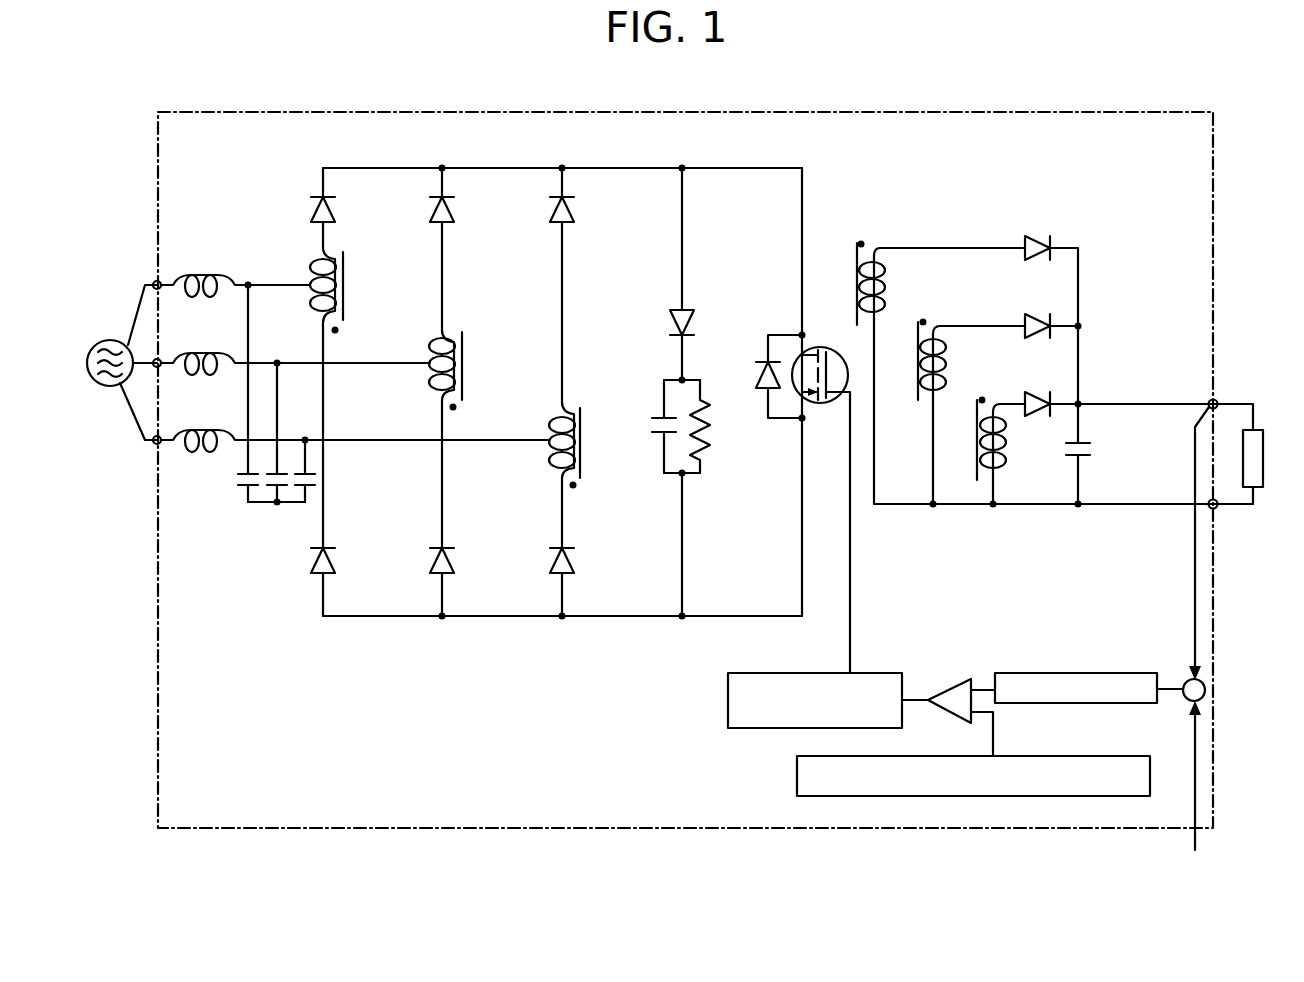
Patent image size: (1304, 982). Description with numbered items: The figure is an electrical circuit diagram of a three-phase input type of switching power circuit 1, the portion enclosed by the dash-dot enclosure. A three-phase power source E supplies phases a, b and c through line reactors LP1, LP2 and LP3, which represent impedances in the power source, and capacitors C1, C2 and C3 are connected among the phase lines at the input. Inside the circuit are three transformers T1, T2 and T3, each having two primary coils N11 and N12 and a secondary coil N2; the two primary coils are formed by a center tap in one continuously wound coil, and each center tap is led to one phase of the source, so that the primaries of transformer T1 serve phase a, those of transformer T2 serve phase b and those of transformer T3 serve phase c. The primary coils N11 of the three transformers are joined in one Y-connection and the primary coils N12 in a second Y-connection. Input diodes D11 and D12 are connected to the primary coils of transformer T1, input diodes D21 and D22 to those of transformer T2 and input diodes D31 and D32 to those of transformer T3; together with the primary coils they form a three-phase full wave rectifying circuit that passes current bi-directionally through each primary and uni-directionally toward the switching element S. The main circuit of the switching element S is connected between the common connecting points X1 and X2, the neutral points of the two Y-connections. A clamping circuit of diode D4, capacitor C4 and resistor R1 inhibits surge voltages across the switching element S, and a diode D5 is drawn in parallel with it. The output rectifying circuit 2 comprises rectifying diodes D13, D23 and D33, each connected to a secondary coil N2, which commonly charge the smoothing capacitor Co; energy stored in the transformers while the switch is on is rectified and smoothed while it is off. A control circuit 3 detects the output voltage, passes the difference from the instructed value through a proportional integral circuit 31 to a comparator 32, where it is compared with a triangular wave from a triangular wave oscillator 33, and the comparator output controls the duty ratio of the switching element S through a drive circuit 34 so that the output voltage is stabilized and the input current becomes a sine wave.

The 3-phase input type of switching power circuit 1 is at (464, 112).
The output rectifying circuit 2 is at (1044, 347).
The control circuit 3 is at (940, 628).
The proportional integral circuit 31 is at (999, 673).
The comparator 32 is at (943, 686).
The triangular wave oscillator 33 is at (797, 774).
The drive circuit 34 is at (728, 706).
The 3-phase power source E is at (97, 385).
The phase a is at (154, 281).
The phase b is at (155, 359).
The phase c is at (155, 445).
The line reactor LP1 is at (190, 275).
The line reactor LP2 is at (190, 353).
The line reactor LP3 is at (190, 430).
The capacitor C1 is at (238, 480).
The capacitor C2 is at (281, 490).
The capacitor C3 is at (315, 480).
The capacitor C4 is at (652, 430).
The resistor R1 is at (712, 440).
The diode D4 is at (670, 323).
The diode D5 is at (756, 378).
The input diode D11 is at (311, 210).
The input diode D12 is at (311, 566).
The input diode D21 is at (430, 210).
The input diode D22 is at (430, 566).
The input diode D31 is at (550, 210).
The input diode D32 is at (550, 566).
The rectifying diode D13 is at (1042, 238).
The rectifying diode D23 is at (1042, 316).
The rectifying diode D33 is at (1042, 396).
The transformer T1 is at (415, 360).
The transformer T2 is at (469, 370).
The transformer T3 is at (588, 445).
The primary coil N11 is at (310, 266).
The primary coil N12 is at (549, 458).
The secondary coil N2 is at (967, 353).
The switching element S is at (826, 352).
The common connecting point X1 is at (360, 168).
The common connecting point X2 is at (352, 616).
The smoothing capacitor Co is at (1066, 456).